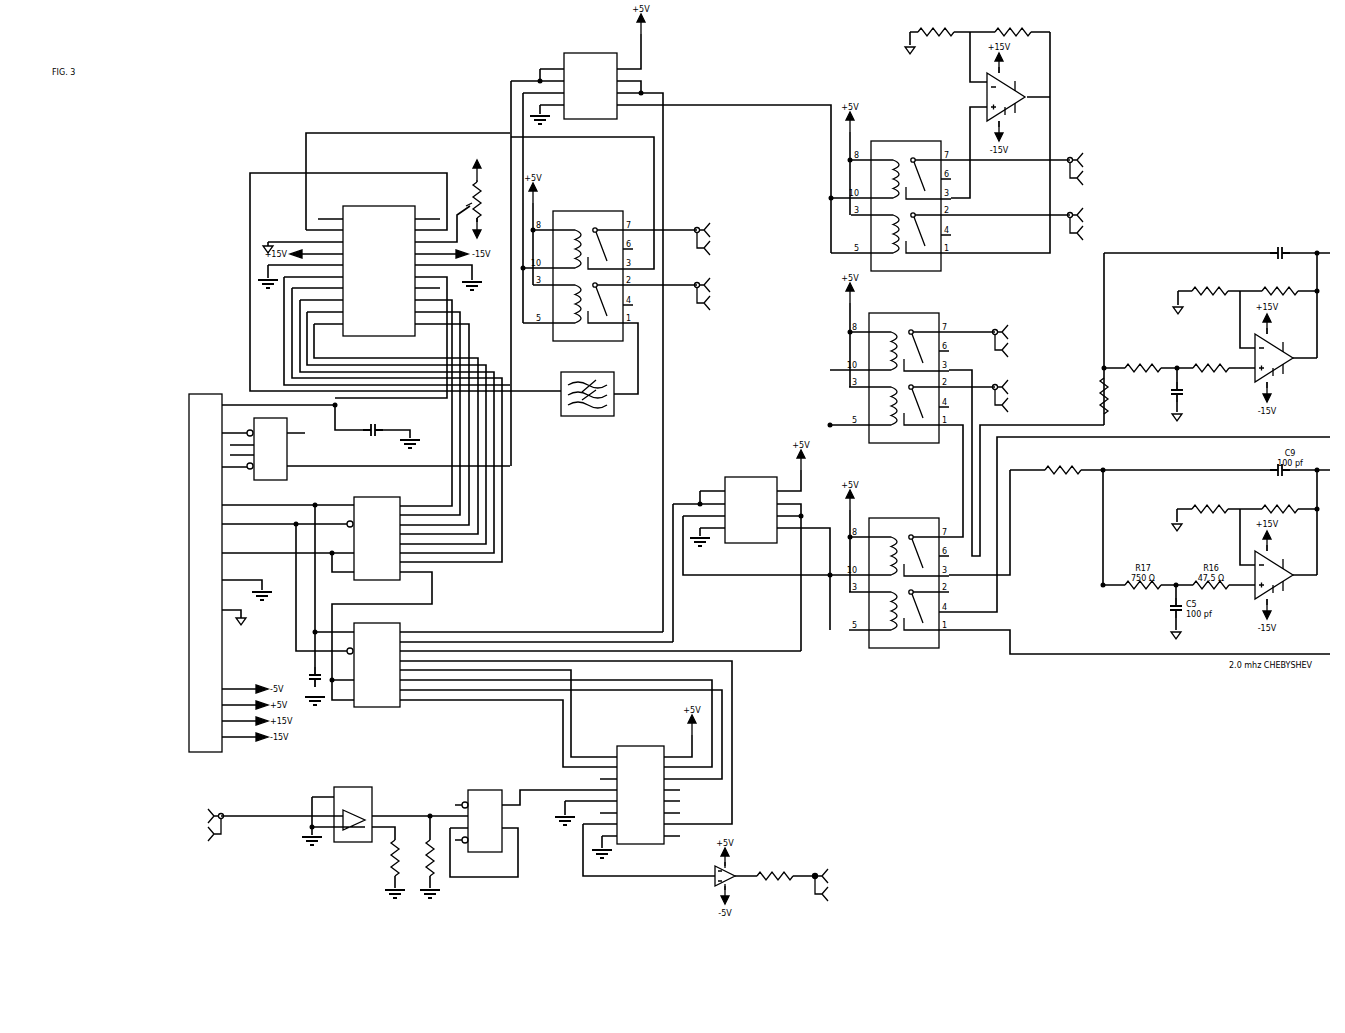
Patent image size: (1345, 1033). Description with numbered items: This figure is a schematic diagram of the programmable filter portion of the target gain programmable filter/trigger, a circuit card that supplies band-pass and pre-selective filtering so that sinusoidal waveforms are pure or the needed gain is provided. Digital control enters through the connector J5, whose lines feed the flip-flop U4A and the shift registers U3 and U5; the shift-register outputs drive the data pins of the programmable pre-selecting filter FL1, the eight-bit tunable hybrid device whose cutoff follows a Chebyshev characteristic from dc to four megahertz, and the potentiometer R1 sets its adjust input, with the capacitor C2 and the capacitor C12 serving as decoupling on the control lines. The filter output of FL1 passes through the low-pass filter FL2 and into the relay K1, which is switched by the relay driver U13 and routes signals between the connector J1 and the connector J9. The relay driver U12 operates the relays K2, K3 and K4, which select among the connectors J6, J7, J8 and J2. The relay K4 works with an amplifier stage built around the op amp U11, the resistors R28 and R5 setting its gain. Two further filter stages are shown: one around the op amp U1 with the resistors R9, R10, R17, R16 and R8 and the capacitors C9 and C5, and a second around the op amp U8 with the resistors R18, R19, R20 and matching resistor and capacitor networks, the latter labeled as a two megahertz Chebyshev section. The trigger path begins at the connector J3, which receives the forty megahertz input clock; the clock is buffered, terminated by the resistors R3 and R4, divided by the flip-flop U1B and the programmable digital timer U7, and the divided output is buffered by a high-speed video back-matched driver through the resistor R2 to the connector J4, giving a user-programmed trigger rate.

The connector J5 is at (205, 567).
The filter FL1 AD6686Q10 FL1 is at (379, 259).
The potentiometer R1 is at (479, 198).
The capacitor C2 is at (374, 422).
The capacitor C12 is at (299, 673).
The flip-flop U4A 74HCT74 U4A is at (269, 449).
The shift register U3 74HCT164 U3 is at (380, 538).
The shift register U5 74HCT164 U5 is at (380, 665).
The relay driver U13 DS3688 U13 is at (588, 76).
The relay K1 RF170 K1 is at (582, 265).
The connector J1 analog in J1 is at (727, 235).
The connector J9 analog out 1 J9 is at (735, 290).
The low pass filter FL2 PLP1.9 FL2 is at (587, 393).
The relay driver U12 DS3688 U12 is at (749, 499).
The relay K2 RF170 K2 is at (898, 367).
The relay K3 RF170 K3 is at (898, 572).
The relay K4 RF170 K4 is at (900, 195).
The connector J6 analog in 1 J6 is at (1028, 337).
The connector J7 analog out 2 J7 is at (1033, 392).
The connector J8 analog in 2 J8 is at (1103, 165).
The connector J2 analog out J2 is at (1104, 220).
The resistor R28 is at (936, 22).
The resistor R5 is at (1013, 22).
The op amp U11 AD9632 U11 is at (1021, 96).
The resistor R9 is at (1210, 282).
The resistor R10 is at (1280, 282).
The capacitor C9 is at (1298, 238).
The op amp U1 AD9637 U1 is at (1279, 356).
The resistor R17 is at (1143, 359).
The resistor R16 is at (1211, 359).
The resistor R8 is at (1118, 396).
The capacitor C5 is at (1192, 392).
The resistor R18 is at (1063, 461).
The resistor R19 is at (1210, 500).
The resistor R20 is at (1280, 500).
The op amp U8 AD963 U8 is at (1287, 575).
The connector J3 40 MHz input J3 is at (251, 820).
The resistor R3 is at (383, 858).
The resistor R4 is at (418, 858).
The flip-flop U1B 74HC174 U1B is at (480, 820).
The counter U7 7415292 U7 is at (642, 785).
The resistor R2 is at (775, 863).
The connector J4 is at (818, 880).